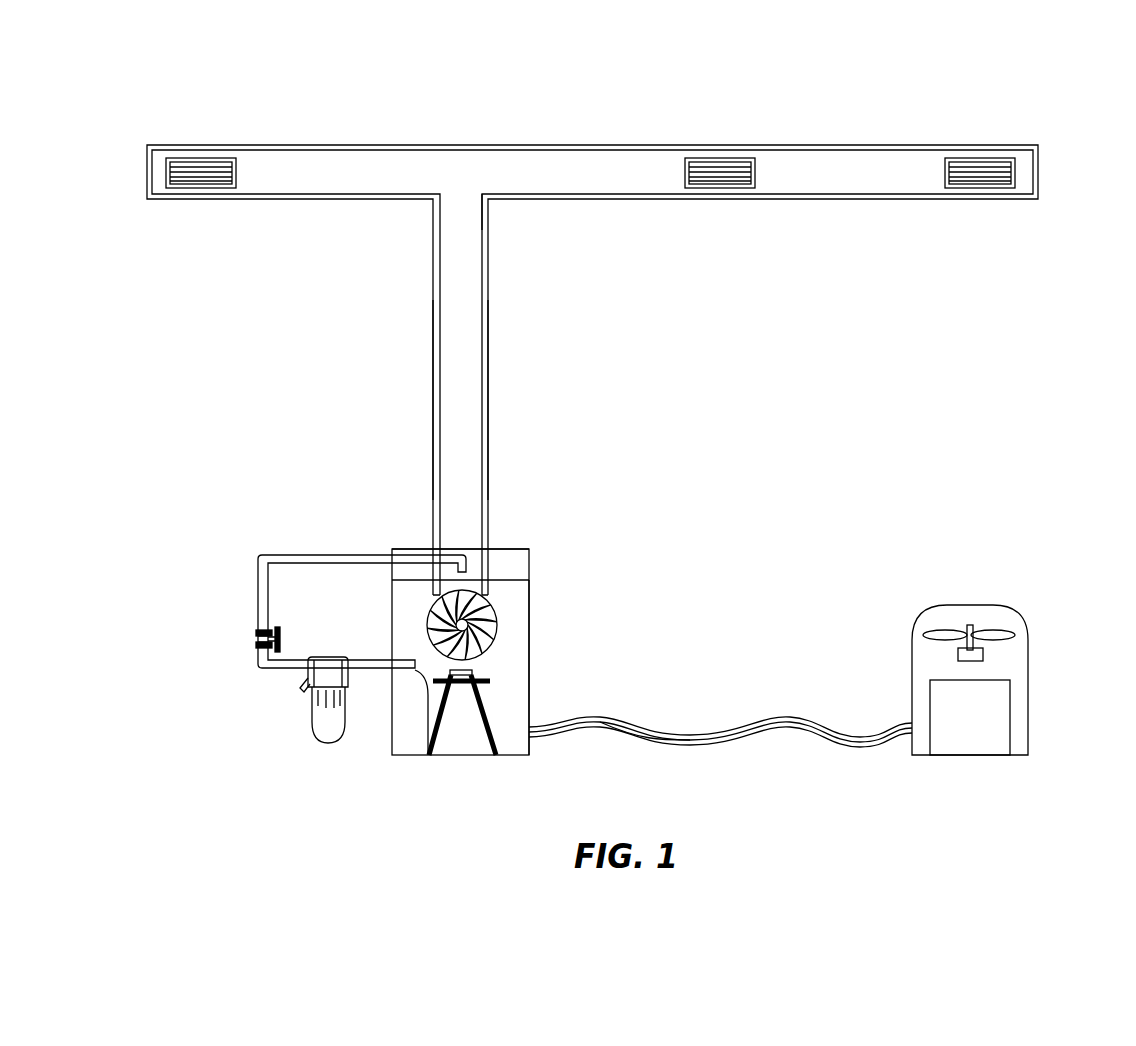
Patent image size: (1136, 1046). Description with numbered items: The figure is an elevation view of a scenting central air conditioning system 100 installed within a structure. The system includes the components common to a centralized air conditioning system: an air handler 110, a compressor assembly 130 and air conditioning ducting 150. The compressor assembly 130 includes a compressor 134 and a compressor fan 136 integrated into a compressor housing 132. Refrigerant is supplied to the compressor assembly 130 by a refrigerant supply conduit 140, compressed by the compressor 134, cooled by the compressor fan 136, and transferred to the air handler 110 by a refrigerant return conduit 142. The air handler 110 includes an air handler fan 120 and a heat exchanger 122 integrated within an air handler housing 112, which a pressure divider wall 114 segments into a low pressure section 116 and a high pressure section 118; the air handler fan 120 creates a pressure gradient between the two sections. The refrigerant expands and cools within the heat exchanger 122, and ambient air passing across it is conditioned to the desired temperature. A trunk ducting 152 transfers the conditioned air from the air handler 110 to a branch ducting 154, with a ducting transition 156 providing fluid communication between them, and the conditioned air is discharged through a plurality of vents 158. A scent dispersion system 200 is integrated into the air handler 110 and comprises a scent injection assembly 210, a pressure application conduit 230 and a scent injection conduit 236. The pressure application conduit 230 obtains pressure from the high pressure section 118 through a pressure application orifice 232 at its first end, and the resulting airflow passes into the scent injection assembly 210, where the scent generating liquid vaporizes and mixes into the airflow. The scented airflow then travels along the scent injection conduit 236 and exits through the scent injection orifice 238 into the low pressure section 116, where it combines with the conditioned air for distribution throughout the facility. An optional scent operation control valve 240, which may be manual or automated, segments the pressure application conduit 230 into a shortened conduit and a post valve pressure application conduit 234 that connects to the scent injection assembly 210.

The scenting central air conditioning system 100 is at (120, 120).
The air handler 110 is at (627, 541).
The air handler housing 112 is at (530, 675).
The pressure divider wall 114 is at (530, 580).
The low pressure section 116 is at (518, 612).
The high pressure section 118 is at (518, 563).
The air handler fan 120 is at (493, 628).
The heat exchanger 122 is at (494, 737).
The compressor assembly 130 is at (1036, 604).
The compressor housing 132 is at (1030, 665).
The compressor 134 is at (1010, 714).
The compressor fan 136 is at (945, 632).
The refrigerant supply conduit 140 is at (740, 727).
The refrigerant return conduit 142 is at (747, 738).
The air conditioning ducting 150 is at (400, 367).
The trunk ducting 152 is at (490, 372).
The branch ducting 154 is at (510, 145).
The ducting transition 156 is at (490, 200).
The vents 158 is at (200, 180).
The scent dispersion system 200 is at (232, 545).
The scent injection assembly 210 is at (312, 722).
The pressure application conduit 230 is at (258, 590).
The pressure application orifice 232 is at (447, 574).
The post valve pressure application conduit 234 is at (280, 670).
The scent injection conduit 236 is at (380, 658).
The scent injection orifice 238 is at (428, 755).
The scent operation control valve 240 is at (258, 640).